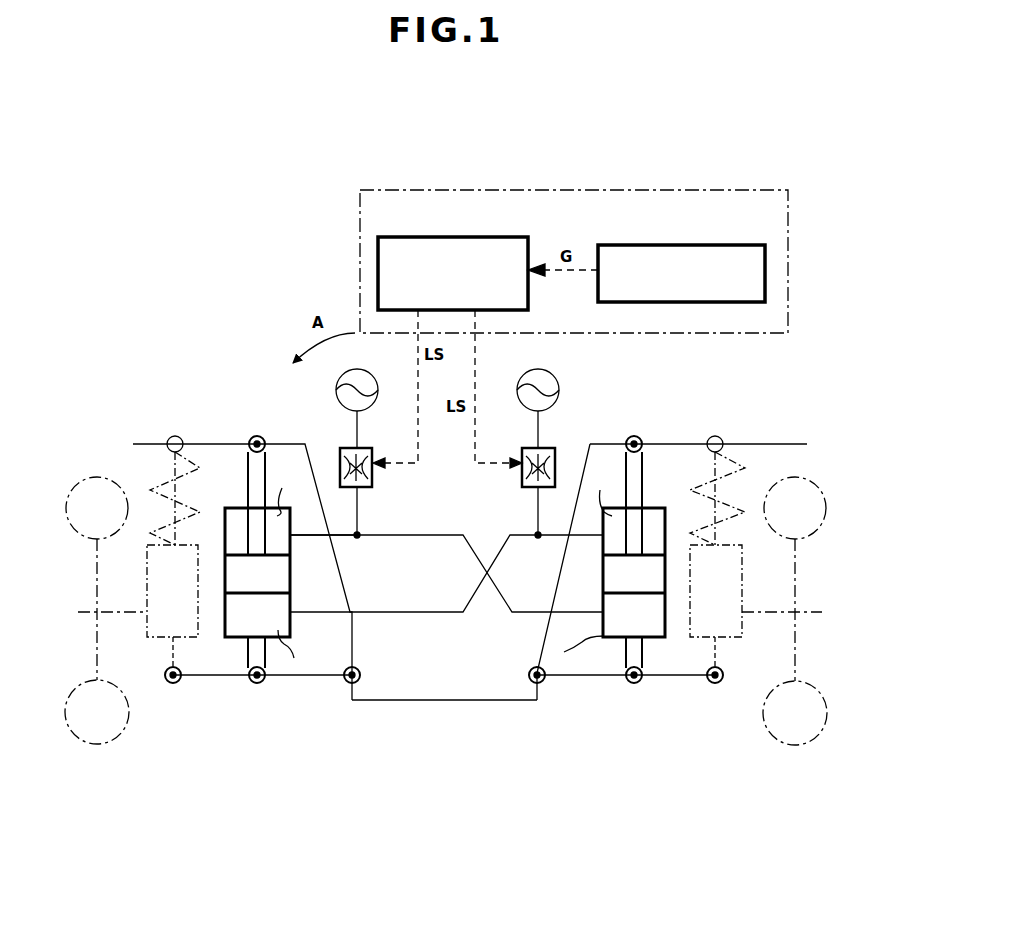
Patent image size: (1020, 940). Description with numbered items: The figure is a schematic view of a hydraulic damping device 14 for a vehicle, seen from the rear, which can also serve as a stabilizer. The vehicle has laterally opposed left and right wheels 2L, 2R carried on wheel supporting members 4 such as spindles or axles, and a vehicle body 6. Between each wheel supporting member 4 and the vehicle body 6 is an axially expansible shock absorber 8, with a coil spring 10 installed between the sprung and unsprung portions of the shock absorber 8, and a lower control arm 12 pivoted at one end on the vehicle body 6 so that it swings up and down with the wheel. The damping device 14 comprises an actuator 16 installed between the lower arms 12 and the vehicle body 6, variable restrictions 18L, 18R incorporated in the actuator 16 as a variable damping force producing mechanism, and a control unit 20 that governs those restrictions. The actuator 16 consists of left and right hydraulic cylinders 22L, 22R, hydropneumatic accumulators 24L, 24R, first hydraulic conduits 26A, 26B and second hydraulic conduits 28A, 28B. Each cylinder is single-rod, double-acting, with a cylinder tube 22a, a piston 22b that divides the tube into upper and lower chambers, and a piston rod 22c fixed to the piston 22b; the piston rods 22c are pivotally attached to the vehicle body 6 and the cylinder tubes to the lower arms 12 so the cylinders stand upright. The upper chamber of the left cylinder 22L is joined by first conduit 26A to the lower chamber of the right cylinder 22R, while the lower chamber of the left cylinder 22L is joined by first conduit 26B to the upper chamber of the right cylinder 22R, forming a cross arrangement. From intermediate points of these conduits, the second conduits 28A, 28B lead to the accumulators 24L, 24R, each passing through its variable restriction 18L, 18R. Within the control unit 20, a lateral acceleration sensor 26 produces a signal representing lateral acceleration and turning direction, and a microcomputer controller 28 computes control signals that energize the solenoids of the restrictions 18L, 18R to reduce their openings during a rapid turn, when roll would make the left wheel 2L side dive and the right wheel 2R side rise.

The left wheel 2L is at (72, 492).
The right wheel 2R is at (802, 744).
The wheel supporting member 4 is at (80, 612).
The vehicle body 6 is at (455, 702).
The shock absorber 8 is at (148, 564).
The coil spring 10 is at (156, 484).
The lower control arm 12 is at (286, 677).
The damping device 14 is at (244, 265).
The actuator 16 is at (382, 683).
The left variable restriction 18L is at (372, 484).
The right variable restriction 18R is at (522, 484).
The control unit 20 is at (582, 190).
The left wheel side hydraulic cylinder 22L is at (257, 595).
The right wheel side hydraulic cylinder 22R is at (646, 648).
The cylinder tube 22a is at (272, 624).
The piston 22b is at (268, 572).
The piston rod 22c is at (248, 492).
The left hydropneumatic accumulator 24L is at (336, 382).
The right hydropneumatic accumulator 24R is at (559, 382).
The lateral acceleration sensor 26 is at (678, 245).
The first hydraulic conduit 26A is at (433, 537).
The first hydraulic conduit 26B is at (433, 614).
The controller 28 is at (453, 244).
The second hydraulic conduit 28A is at (358, 516).
The second hydraulic conduit 28B is at (538, 520).